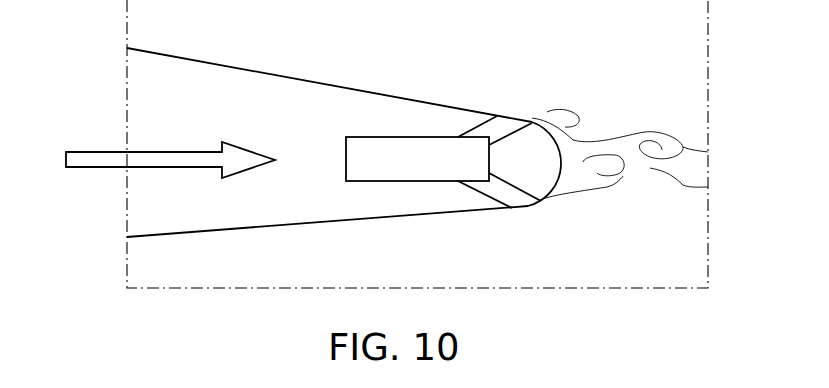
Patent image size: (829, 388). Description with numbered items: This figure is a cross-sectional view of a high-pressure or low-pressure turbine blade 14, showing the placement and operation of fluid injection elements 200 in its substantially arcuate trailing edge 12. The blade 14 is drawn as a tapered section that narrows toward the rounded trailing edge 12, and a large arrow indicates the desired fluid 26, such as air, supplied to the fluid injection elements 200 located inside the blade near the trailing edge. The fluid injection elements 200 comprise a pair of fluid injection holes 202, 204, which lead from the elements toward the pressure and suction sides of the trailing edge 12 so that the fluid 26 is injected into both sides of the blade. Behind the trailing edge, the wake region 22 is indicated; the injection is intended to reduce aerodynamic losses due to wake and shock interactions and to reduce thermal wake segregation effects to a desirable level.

The trailing edge 12 is at (534, 209).
The turbine blade 14 is at (302, 80).
The fluid wake / vortices 22 is at (663, 140).
The fluid 26 is at (85, 170).
The fluid injection elements 200 is at (427, 184).
The fluid injection hole 202 is at (482, 124).
The fluid injection hole 204 is at (485, 197).